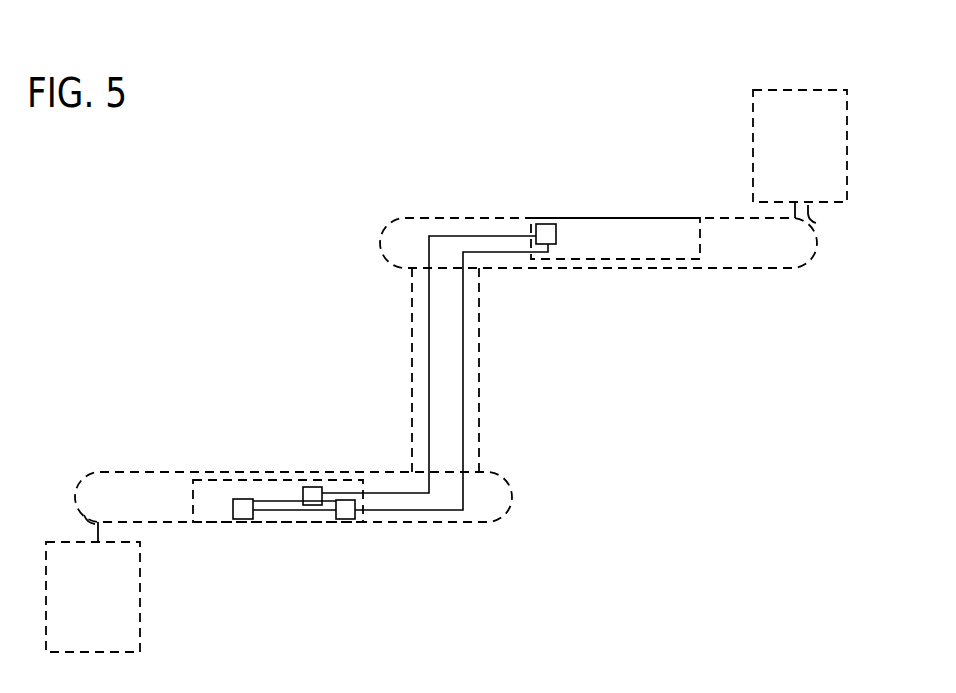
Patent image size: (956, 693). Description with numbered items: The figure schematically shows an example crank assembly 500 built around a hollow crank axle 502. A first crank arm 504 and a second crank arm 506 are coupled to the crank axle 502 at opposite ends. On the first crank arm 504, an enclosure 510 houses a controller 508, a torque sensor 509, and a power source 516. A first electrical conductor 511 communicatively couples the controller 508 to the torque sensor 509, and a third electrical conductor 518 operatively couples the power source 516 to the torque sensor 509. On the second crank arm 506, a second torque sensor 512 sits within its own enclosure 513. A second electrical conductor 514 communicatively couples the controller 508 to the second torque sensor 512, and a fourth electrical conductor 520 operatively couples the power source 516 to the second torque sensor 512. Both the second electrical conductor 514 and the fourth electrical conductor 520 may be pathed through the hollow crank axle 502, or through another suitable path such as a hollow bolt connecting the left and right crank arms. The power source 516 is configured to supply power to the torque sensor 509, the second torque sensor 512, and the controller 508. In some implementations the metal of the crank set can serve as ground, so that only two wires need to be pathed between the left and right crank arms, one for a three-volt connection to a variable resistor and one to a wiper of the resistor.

The crank assembly 500 is at (445, 117).
The hollow crank axle 502 is at (480, 392).
The first crank arm 504 is at (513, 500).
The second crank arm 506 is at (380, 245).
The controller 508 is at (312, 487).
The torque sensor 509 is at (240, 519).
The enclosure 510 is at (218, 480).
The first electrical conductor 511 is at (265, 501).
The second torque sensor 512 is at (547, 224).
The enclosure 513 is at (676, 261).
The second electrical conductor 514 is at (429, 398).
The power source 516 is at (345, 519).
The third electrical conductor 518 is at (285, 511).
The fourth electrical conductor 520 is at (437, 523).